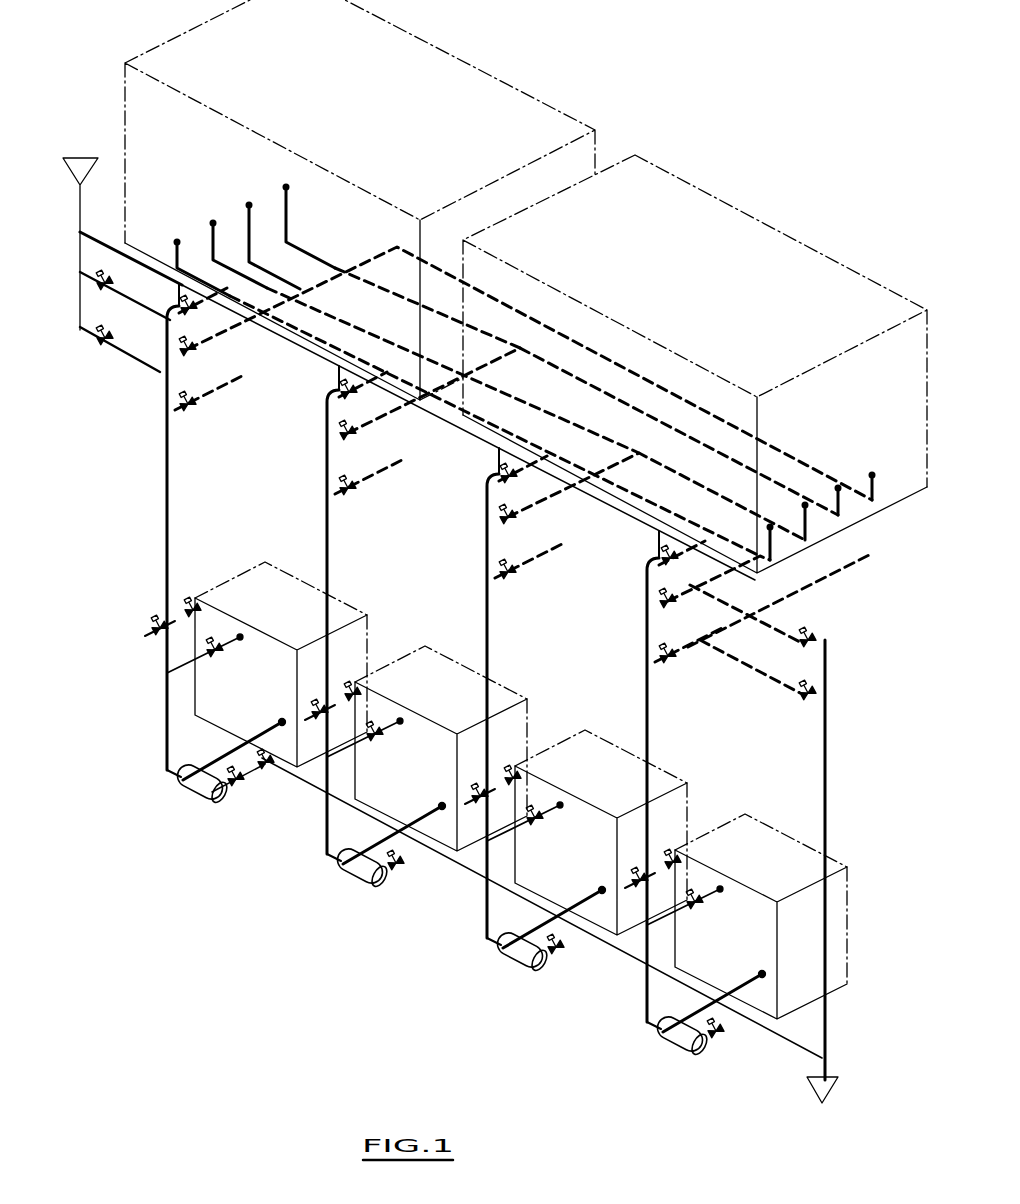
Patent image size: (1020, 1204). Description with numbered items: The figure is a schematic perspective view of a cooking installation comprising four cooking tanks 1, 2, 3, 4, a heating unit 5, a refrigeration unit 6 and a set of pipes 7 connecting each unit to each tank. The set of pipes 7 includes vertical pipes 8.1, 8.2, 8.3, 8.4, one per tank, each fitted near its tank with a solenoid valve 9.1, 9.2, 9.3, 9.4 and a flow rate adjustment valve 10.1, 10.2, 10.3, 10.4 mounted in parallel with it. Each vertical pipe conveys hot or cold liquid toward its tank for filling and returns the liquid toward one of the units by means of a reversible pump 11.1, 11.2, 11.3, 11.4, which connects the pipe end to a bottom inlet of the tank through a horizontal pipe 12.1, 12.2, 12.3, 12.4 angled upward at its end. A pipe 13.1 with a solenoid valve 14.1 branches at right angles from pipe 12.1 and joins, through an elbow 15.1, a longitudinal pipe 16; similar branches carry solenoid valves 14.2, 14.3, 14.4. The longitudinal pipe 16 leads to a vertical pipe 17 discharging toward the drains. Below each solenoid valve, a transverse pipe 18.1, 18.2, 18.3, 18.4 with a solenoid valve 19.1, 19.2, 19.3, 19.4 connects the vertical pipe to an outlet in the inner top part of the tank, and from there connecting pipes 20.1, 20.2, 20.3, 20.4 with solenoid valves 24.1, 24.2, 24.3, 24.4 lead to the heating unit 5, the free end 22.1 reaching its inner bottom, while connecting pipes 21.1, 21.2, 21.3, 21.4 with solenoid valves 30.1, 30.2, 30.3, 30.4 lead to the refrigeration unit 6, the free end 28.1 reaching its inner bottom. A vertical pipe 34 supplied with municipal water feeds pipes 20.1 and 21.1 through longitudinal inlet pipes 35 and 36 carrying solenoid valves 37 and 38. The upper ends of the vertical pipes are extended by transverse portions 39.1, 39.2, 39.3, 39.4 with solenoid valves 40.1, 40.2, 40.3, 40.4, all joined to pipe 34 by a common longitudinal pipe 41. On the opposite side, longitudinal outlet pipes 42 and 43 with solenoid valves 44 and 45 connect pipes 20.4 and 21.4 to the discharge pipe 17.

The cooking tank 1 is at (285, 610).
The cooking tank 2 is at (441, 693).
The cooking tank 3 is at (601, 777).
The cooking tank 4 is at (761, 862).
The heating unit 5 is at (365, 100).
The refrigeration unit 6 is at (723, 282).
The set of pipes 7 is at (110, 471).
The vertical pipe 8.1 is at (165, 544).
The vertical pipe 8.2 is at (327, 542).
The vertical pipe 8.3 is at (486, 624).
The vertical pipe 8.4 is at (646, 710).
The solenoid valve 9.1 is at (155, 626).
The solenoid valve 9.2 is at (317, 708).
The solenoid valve 9.3 is at (480, 788).
The solenoid valve 9.4 is at (638, 872).
The flow rate adjustment valve 10.1 is at (193, 600).
The flow rate adjustment valve 10.2 is at (352, 686).
The flow rate adjustment valve 10.3 is at (513, 771).
The flow rate adjustment valve 10.4 is at (673, 856).
The reversible pump 11.1 is at (190, 794).
The reversible pump 11.2 is at (355, 885).
The reversible pump 11.3 is at (504, 966).
The reversible pump 11.4 is at (678, 1044).
The pipe 12.1 is at (257, 740).
The pipe 12.2 is at (432, 810).
The pipe 12.3 is at (592, 892).
The pipe 12.4 is at (757, 980).
The pipe 13.1 is at (230, 771).
The solenoid valve 14.1 is at (236, 786).
The solenoid valve 14.2 is at (395, 872).
The solenoid valve 14.3 is at (562, 952).
The solenoid valve 14.4 is at (736, 1034).
The elbow 15.1 is at (267, 770).
The longitudinal pipe 16 is at (448, 880).
The vertical pipe 17 is at (825, 764).
The transverse pipe 18.1 is at (172, 676).
The transverse pipe 18.2 is at (332, 758).
The transverse pipe 18.3 is at (490, 844).
The transverse pipe 18.4 is at (652, 928).
The solenoid valve 19.1 is at (226, 654).
The solenoid valve 19.2 is at (383, 734).
The solenoid valve 19.3 is at (546, 820).
The solenoid valve 19.4 is at (708, 905).
The connecting pipe 20.1 is at (240, 389).
The connecting pipe 20.2 is at (400, 464).
The connecting pipe 20.3 is at (560, 562).
The connecting pipe 20.4 is at (694, 654).
The connecting pipe 21.1 is at (230, 330).
The connecting pipe 21.2 is at (397, 414).
The connecting pipe 21.3 is at (546, 493).
The connecting pipe 21.4 is at (695, 606).
The free end 22.1 is at (178, 242).
The solenoid valve 24.1 is at (195, 410).
The solenoid valve 24.2 is at (354, 494).
The solenoid valve 24.3 is at (512, 582).
The solenoid valve 24.4 is at (662, 670).
The free end 28.1 is at (873, 470).
The solenoid valve 30.1 is at (190, 354).
The solenoid valve 30.2 is at (352, 441).
The solenoid valve 30.3 is at (512, 524).
The solenoid valve 30.4 is at (662, 605).
The vertical pipe 34 is at (80, 252).
The longitudinal inlet pipe 35 is at (80, 335).
The longitudinal inlet pipe 36 is at (78, 292).
The solenoid valve 37 is at (106, 350).
The solenoid valve 38 is at (112, 295).
The transverse portion 39.1 is at (177, 303).
The transverse portion 39.2 is at (339, 382).
The transverse portion 39.3 is at (499, 470).
The transverse portion 39.4 is at (655, 566).
The solenoid valve 40.1 is at (200, 306).
The solenoid valve 40.2 is at (345, 400).
The solenoid valve 40.3 is at (516, 480).
The solenoid valve 40.4 is at (677, 557).
The common longitudinal pipe 41 is at (491, 446).
The longitudinal outlet pipe 42 is at (767, 687).
The longitudinal outlet pipe 43 is at (771, 633).
The solenoid valve 44 is at (813, 690).
The solenoid valve 45 is at (812, 636).